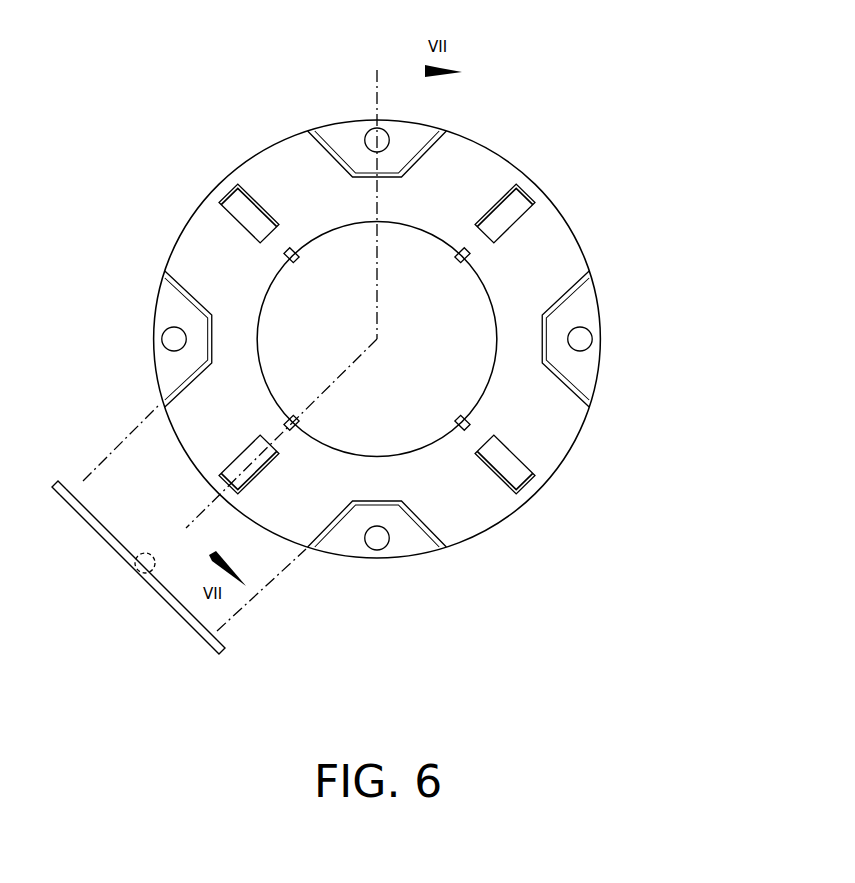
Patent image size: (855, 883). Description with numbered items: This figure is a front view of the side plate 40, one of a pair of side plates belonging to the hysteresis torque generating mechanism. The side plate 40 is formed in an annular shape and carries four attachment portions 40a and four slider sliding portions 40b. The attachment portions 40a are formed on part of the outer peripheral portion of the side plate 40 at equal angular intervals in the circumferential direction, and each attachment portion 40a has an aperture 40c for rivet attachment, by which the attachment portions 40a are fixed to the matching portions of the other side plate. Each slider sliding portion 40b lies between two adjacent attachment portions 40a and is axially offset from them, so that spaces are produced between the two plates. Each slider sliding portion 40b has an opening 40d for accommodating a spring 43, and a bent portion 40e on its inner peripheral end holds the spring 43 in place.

The side plate 40 is at (546, 100).
The attachment portion 40a is at (405, 118).
The slider sliding portion 40b is at (201, 231).
The aperture 40c is at (370, 128).
The opening 40d is at (231, 200).
The bent portion 40e is at (288, 258).
The spring 43 is at (146, 552).